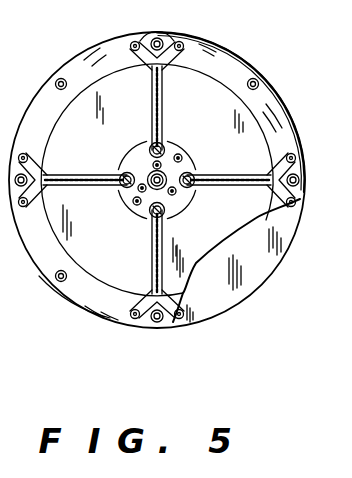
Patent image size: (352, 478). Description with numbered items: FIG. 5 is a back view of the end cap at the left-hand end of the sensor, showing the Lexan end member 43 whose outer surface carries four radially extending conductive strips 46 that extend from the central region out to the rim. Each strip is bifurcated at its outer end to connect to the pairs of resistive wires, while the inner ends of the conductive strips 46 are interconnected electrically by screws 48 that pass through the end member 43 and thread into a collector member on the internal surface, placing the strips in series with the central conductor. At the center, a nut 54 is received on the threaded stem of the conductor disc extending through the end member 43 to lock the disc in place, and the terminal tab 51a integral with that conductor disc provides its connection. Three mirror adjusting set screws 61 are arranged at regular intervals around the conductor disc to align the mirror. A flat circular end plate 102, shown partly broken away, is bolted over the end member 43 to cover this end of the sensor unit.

The end member 43 is at (51, 78).
The conductive strips 46 is at (66, 174).
The screws 48 is at (165, 146).
The nut 54 is at (149, 177).
The mirror adjusting set screws 61 is at (152, 160).
The terminal tab 51a is at (183, 157).
The end plate 102 is at (268, 269).